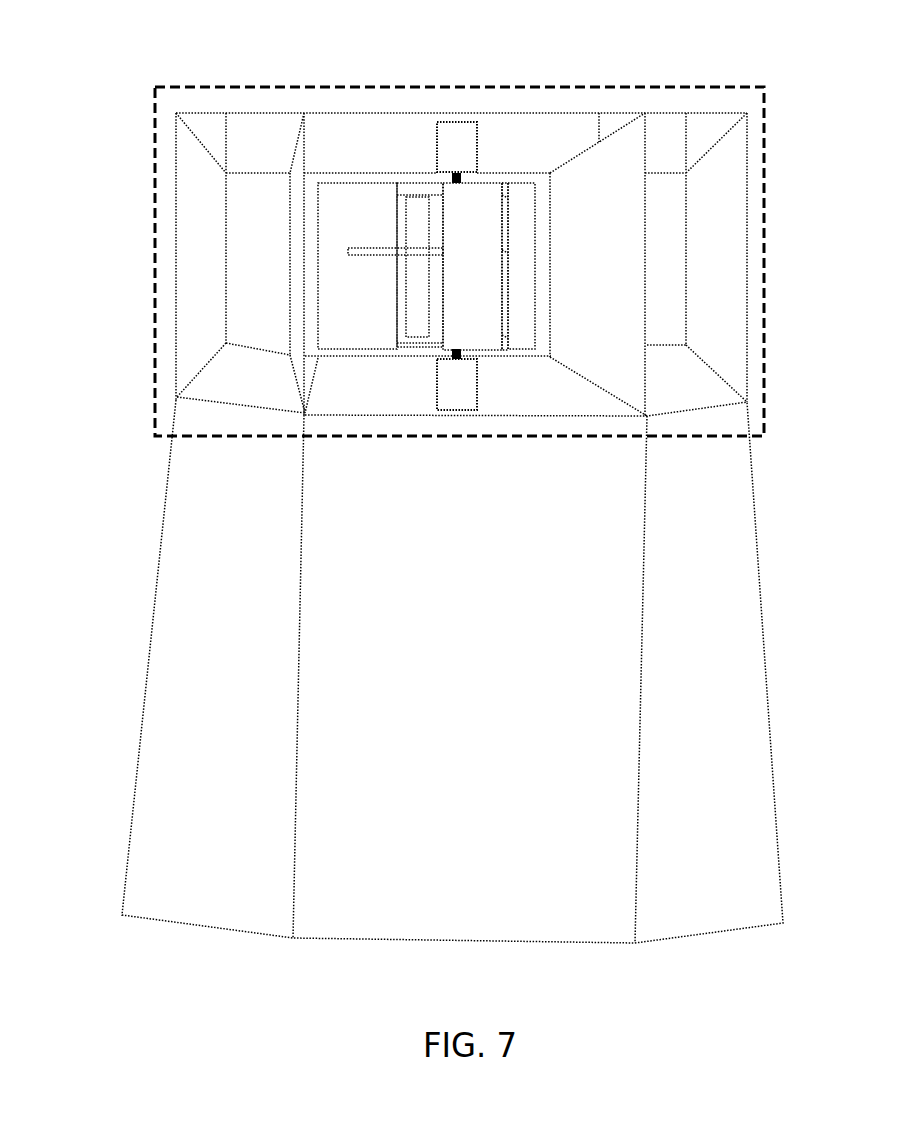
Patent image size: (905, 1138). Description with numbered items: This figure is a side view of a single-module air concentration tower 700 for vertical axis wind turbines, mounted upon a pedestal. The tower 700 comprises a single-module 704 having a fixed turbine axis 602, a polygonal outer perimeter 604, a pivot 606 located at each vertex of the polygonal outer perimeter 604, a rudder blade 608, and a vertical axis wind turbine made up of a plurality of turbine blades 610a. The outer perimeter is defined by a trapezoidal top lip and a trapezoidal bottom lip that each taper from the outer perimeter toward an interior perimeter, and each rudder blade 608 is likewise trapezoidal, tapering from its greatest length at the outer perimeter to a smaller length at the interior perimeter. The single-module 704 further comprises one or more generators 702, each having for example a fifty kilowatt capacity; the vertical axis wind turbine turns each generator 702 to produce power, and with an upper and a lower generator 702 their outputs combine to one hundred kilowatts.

The single-module air concentration tower 700 is at (98, 78).
The single-module 704 is at (155, 240).
The rudder blade 608 is at (297, 236).
The turbine blades 610a is at (370, 200).
The fixed turbine axis 602 is at (419, 225).
The pivot 606 is at (305, 413).
The polygonal outer perimeter 604 is at (403, 414).
The generator 702 is at (465, 128).